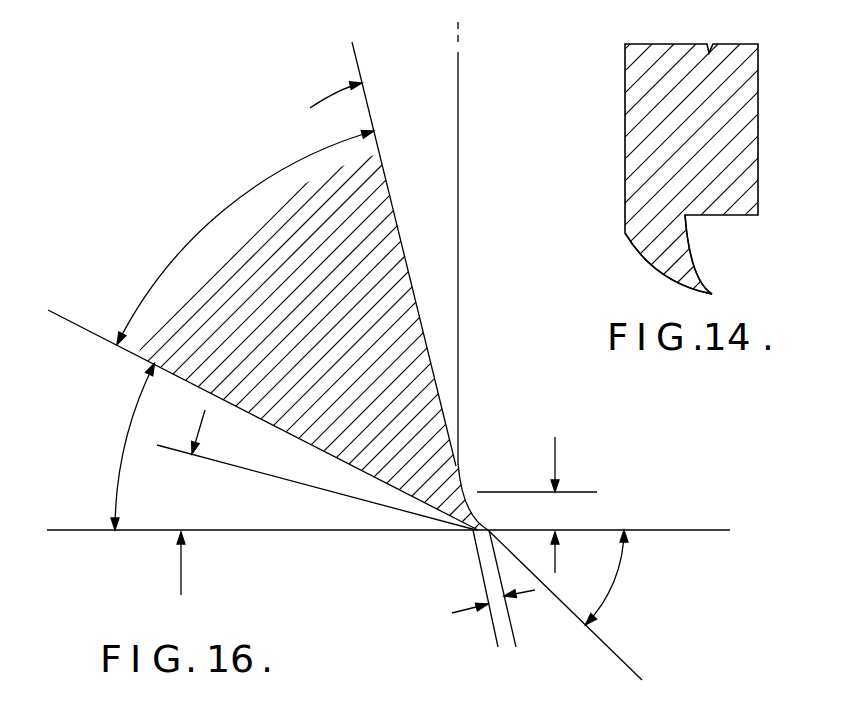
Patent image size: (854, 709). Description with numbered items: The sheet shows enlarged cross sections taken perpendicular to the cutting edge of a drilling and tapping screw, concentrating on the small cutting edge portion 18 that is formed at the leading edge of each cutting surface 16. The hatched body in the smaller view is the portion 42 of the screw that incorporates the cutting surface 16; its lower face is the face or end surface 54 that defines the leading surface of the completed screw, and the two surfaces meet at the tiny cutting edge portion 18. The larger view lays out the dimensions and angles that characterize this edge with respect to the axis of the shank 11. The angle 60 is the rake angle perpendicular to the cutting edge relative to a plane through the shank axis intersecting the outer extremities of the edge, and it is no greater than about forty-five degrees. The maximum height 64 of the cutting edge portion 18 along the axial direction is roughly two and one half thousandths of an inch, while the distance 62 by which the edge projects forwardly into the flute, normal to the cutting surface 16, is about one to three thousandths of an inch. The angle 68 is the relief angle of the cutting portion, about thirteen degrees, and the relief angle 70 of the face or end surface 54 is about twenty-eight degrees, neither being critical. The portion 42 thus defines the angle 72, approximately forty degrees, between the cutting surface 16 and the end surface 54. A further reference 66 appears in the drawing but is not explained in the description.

In FIG. 14, the shank 11 is at (634, 135).
In FIG. 16, the cutting surface 16 is at (387, 190).
In FIG. 14, the cutting surface 16 is at (700, 250).
In FIG. 16, the cutting edge portion 18 is at (486, 532).
In FIG. 14, the cutting edge portion 18 is at (712, 294).
In FIG. 16, the portion of the screw 42 is at (367, 287).
In FIG. 16, the face or end surface 54 is at (296, 436).
In FIG. 14, the face or end surface 54 is at (653, 257).
In FIG. 16, the angle 60 is at (606, 598).
In FIG. 16, the distance 62 is at (452, 613).
In FIG. 16, the maximum height 64 is at (555, 445).
In FIG. 16, the reference line 66 is at (459, 63).
In FIG. 16, the angle 68 is at (182, 573).
In FIG. 16, the relief angle 70 is at (117, 492).
In FIG. 16, the angle 72 is at (170, 262).